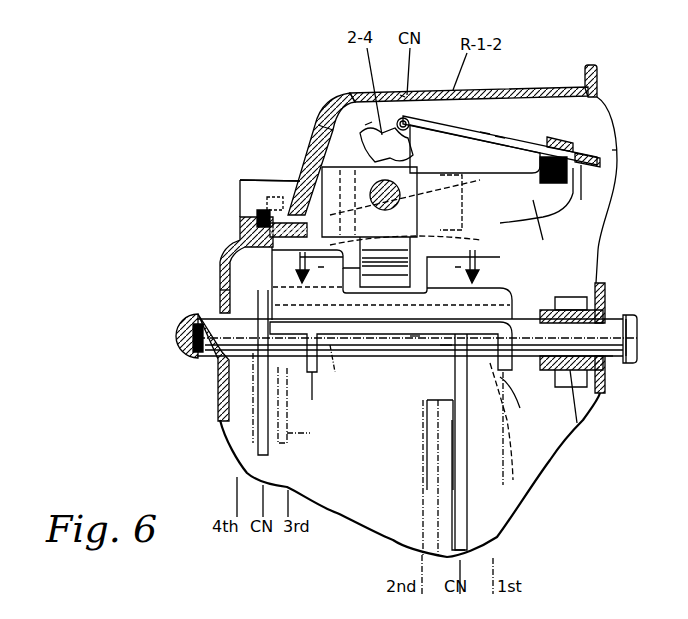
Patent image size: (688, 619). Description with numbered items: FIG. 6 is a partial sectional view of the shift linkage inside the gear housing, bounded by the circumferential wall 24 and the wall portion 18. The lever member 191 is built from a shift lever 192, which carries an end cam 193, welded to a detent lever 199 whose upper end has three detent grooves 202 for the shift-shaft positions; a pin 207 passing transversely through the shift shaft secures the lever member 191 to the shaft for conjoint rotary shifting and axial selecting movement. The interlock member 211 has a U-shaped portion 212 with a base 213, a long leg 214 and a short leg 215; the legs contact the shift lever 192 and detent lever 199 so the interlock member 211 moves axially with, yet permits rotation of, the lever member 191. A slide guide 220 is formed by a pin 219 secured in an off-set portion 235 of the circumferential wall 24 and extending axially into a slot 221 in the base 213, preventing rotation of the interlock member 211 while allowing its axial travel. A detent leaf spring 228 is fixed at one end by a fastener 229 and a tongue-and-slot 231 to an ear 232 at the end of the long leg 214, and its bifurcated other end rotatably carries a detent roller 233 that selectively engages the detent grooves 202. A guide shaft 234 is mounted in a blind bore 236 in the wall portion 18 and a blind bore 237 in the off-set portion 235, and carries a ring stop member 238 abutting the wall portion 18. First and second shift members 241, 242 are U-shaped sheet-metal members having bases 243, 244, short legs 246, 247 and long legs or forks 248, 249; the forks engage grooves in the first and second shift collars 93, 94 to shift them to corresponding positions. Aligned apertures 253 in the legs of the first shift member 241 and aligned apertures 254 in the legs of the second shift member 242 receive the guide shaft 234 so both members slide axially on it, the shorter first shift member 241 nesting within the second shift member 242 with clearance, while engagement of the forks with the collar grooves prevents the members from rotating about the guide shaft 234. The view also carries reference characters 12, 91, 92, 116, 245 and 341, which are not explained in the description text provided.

The section line 12 is at (395, 270).
The wall portion 18 is at (633, 363).
The circumferential wall 24 is at (222, 272).
The first-second shift rod position 91 is at (428, 480).
The third-fourth shift rod position 92 is at (247, 392).
The 1st shift collar 93 is at (445, 518).
The 2nd shift collar 94 is at (255, 415).
The pivot pin 116 is at (400, 200).
The lever member 191 is at (330, 150).
The shift lever 192 is at (460, 245).
The end cam 193 is at (373, 290).
The detent lever 199 is at (432, 168).
The detent grooves 202 is at (370, 122).
The pin 207 is at (445, 190).
The interlock member 211 is at (482, 130).
The U-shaped portion 212 is at (327, 160).
The base 213 is at (325, 170).
The long leg 214 is at (551, 226).
The short leg 215 is at (386, 145).
The pin 219 is at (257, 212).
The slide guide 220 is at (300, 205).
The slot 221 is at (295, 167).
The detent leaf spring 228 is at (507, 127).
The fastener 229 is at (563, 140).
The tongue-and-slot 231 is at (615, 147).
The ear 232 is at (542, 197).
The detent roller 233 is at (400, 108).
The guide shaft 234 is at (530, 333).
The off-set portion 235 is at (222, 297).
The blind bore 236 is at (613, 353).
The blind bore 237 is at (195, 340).
The ring stop member 238 is at (570, 372).
The 1st shift member 241 is at (445, 350).
The 2nd shift member 242 is at (205, 338).
The base 243 is at (415, 342).
The base 244 is at (335, 350).
The lug 245 is at (417, 340).
The short leg 246 is at (314, 395).
The short leg 247 is at (524, 428).
The fork 248 is at (430, 446).
The fork 249 is at (257, 453).
The aligned apertures 253 is at (507, 415).
The aligned apertures 254 is at (520, 343).
The bearing boss 341 is at (583, 297).